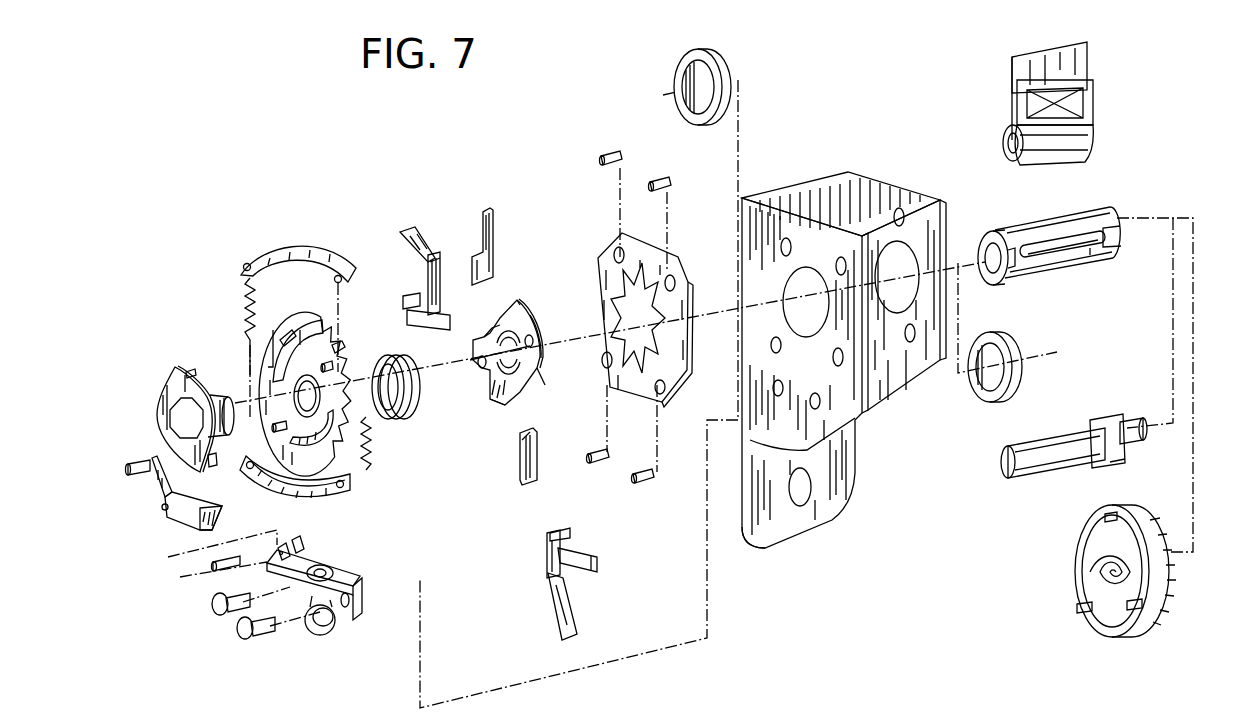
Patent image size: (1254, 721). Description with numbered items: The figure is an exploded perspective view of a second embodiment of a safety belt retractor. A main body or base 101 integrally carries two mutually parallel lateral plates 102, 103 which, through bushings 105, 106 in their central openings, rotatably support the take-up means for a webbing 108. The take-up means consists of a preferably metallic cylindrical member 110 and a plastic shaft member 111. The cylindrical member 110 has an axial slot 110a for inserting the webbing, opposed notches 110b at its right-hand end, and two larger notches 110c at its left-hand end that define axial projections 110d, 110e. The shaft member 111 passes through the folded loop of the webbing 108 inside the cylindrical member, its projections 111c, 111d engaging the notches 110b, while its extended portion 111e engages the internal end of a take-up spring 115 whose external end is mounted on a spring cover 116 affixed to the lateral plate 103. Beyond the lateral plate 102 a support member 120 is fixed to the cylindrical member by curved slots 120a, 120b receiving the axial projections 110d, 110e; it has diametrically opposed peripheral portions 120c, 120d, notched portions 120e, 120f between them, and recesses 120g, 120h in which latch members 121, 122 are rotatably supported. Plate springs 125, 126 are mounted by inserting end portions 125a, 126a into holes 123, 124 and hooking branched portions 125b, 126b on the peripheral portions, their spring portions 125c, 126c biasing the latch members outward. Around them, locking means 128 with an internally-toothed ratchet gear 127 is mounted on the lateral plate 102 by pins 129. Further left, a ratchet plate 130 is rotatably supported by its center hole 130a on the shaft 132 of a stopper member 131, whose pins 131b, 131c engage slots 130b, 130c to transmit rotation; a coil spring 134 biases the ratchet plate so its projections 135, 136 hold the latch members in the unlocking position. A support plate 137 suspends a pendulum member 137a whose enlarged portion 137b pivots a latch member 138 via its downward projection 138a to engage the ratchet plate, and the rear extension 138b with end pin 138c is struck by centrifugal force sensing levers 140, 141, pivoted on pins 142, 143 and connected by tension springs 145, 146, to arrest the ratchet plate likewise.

The main body or base 101 is at (835, 510).
The lateral plate 102 is at (800, 215).
The lateral plate 103 is at (880, 180).
The bushing 105 is at (700, 125).
The bushing 106 is at (1000, 400).
The webbing 108 is at (1085, 65).
The cylindrical member 110 is at (1095, 228).
The slot 110a is at (1090, 255).
The notch 110b is at (1122, 230).
The notch 110c is at (1025, 265).
The axial projection 110d is at (990, 235).
The axial projection 110e is at (990, 285).
The shaft member 111 is at (1035, 480).
The projection 111c is at (1125, 458).
The projection 111d is at (1090, 430).
The extended portion 111e is at (1125, 423).
The take-up spring 115 is at (1112, 620).
The spring cover 116 is at (1165, 585).
The support member 120 is at (520, 300).
The curved slot 120a is at (513, 313).
The curved slot 120b is at (508, 392).
The peripheral portion 120c is at (541, 322).
The peripheral portion 120d is at (482, 380).
The notched portion 120e is at (500, 325).
The notched portion 120f is at (522, 445).
The recess 120g is at (478, 350).
The recess 120h is at (545, 385).
The latch member 121 is at (493, 222).
The latch member 122 is at (520, 478).
The hole 123 is at (480, 362).
The hole 124 is at (535, 343).
The plate spring 125 is at (430, 262).
The end portion 125a is at (440, 273).
The branched portion 125b is at (408, 296).
The spring portion 125c is at (410, 232).
The plate spring 126 is at (560, 570).
The end portion 126a is at (562, 530).
The branched portion 126b is at (580, 548).
The spring portion 126c is at (572, 625).
The internally-toothed ratchet gear 127 is at (680, 332).
The locking means 128 is at (672, 300).
The pin 129 is at (603, 154).
The ratchet plate 130 is at (352, 432).
The center hole 130a is at (310, 348).
The slot 130b is at (277, 372).
The slot 130c is at (347, 455).
The stopper member 131 is at (162, 404).
The pin 131b is at (180, 366).
The pin 131c is at (210, 466).
The shaft 132 is at (218, 395).
The coil spring 134 is at (412, 420).
The projection 135 is at (340, 352).
The projection 136 is at (277, 487).
The support plate 137 is at (355, 620).
The pendulum member 137a is at (320, 636).
The enlarged portion 137b is at (330, 570).
The latch member 138 is at (162, 510).
The downward projection 138a is at (205, 522).
The rear extension 138b is at (152, 480).
The end pin 138c is at (140, 460).
The centrifugal force sensing lever 140 is at (308, 247).
The centrifugal force sensing lever 141 is at (280, 487).
The pin 142 is at (332, 364).
The pin 143 is at (273, 428).
The tension spring 145 is at (243, 300).
The tension spring 146 is at (372, 455).